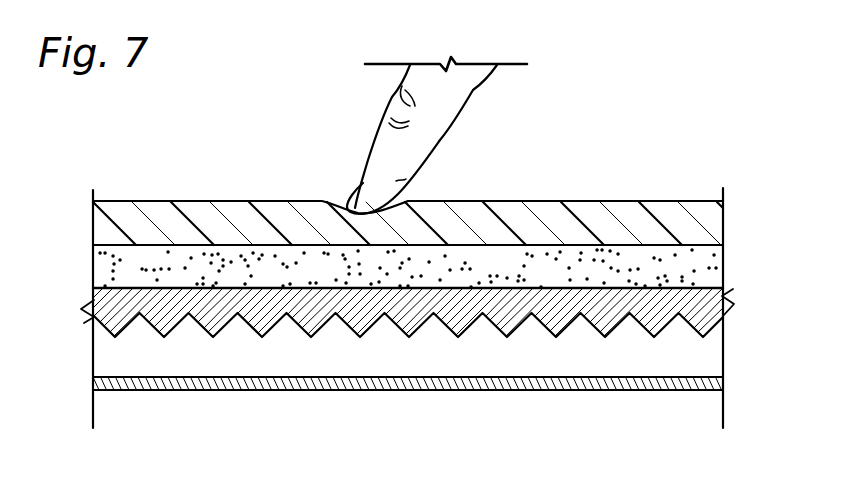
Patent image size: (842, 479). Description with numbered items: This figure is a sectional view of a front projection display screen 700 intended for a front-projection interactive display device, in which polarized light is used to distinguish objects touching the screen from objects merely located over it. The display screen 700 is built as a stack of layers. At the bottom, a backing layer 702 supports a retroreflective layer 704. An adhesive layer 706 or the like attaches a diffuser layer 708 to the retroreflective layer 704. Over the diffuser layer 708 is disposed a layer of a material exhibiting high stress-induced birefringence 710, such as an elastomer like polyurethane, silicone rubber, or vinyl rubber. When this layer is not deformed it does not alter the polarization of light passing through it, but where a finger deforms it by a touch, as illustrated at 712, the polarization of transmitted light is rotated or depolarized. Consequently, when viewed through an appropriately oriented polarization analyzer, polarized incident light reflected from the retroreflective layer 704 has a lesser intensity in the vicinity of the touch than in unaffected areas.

The front projection display screen 700 is at (752, 187).
The backing layer 702 is at (715, 386).
The retroreflective layer 704 is at (710, 354).
The adhesive layer 706 is at (712, 297).
The diffuser layer 708 is at (712, 270).
The layer of a material exhibiting high stress-induced birefringence 710 is at (711, 228).
The touch 712 is at (344, 194).